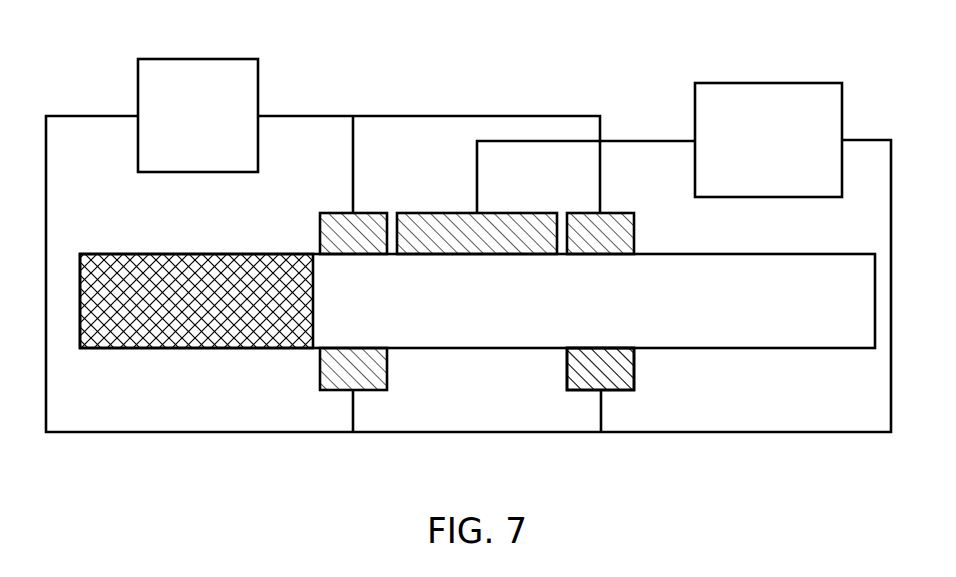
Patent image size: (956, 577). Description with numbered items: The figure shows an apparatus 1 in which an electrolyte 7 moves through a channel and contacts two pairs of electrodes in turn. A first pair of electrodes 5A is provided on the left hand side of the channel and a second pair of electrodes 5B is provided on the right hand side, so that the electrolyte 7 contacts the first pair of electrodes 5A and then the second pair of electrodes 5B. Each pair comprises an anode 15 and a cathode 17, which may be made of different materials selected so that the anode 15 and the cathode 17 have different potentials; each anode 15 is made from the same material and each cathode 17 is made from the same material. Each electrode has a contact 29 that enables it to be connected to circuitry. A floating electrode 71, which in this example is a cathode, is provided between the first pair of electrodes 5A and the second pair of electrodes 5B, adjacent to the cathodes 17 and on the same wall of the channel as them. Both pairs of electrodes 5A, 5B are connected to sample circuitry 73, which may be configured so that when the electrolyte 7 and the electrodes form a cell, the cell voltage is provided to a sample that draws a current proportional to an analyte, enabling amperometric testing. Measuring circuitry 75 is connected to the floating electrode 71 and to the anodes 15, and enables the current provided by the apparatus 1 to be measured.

The apparatus 1 is at (477, 322).
The first pair of electrodes 5A is at (341, 213).
The second pair of electrodes 5B is at (618, 213).
The electrolyte 7 is at (201, 348).
The anode 15 is at (320, 366).
The cathode 17 is at (481, 279).
The contact 29 is at (353, 164).
The floating electrode 71 is at (425, 213).
The sample circuitry 73 is at (258, 95).
The measuring circuitry 75 is at (842, 112).